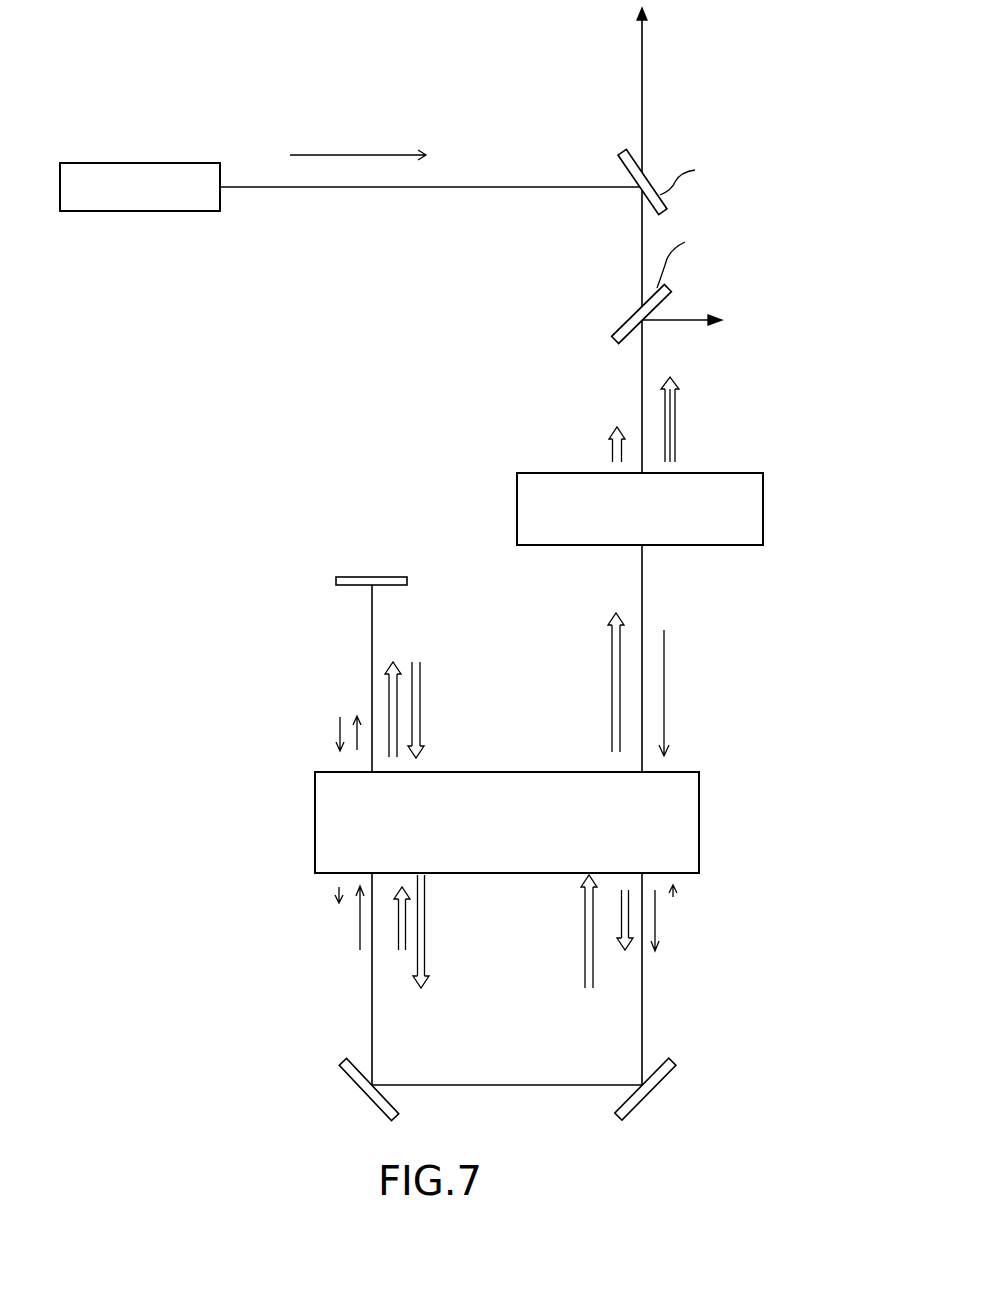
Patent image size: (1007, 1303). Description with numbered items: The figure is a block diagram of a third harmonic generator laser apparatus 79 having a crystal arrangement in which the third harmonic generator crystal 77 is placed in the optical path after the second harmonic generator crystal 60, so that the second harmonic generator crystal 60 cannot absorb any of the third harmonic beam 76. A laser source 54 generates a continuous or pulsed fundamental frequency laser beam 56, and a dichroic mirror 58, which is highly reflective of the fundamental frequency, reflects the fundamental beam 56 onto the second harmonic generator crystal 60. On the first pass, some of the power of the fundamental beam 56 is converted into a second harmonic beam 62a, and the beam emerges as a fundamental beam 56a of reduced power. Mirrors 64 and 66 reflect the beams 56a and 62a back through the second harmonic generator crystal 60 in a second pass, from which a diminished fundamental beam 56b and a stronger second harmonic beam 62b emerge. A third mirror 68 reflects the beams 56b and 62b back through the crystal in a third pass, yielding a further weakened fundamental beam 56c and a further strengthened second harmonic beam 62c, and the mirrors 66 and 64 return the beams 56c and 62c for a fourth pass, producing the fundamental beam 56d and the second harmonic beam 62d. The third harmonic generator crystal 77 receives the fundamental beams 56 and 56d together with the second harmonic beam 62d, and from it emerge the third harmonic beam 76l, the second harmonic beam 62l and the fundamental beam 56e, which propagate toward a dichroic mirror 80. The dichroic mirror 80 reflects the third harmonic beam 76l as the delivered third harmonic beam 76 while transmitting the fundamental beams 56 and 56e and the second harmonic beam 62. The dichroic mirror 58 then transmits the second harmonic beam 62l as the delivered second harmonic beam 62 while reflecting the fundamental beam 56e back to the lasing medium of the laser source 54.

The laser source 54 is at (153, 163).
The fundamental frequency laser beam 56 is at (342, 150).
The fundamental beam 56e is at (475, 190).
The dichroic mirror 58 is at (622, 152).
The second harmonic beam 62 is at (642, 50).
The dichroic mirror 80 is at (618, 330).
The third harmonic beam 76 is at (678, 320).
The second harmonic beam 62l is at (610, 447).
The third harmonic beam 76l is at (677, 425).
The third harmonic generator crystal 77 is at (763, 510).
The third mirror 68 is at (360, 577).
The second harmonic beam 62b is at (400, 680).
The fundamental beam 56b is at (342, 733).
The second harmonic beam 62d is at (611, 672).
The fundamental beam 56d is at (688, 709).
The second harmonic generator crystal 60 is at (699, 830).
The fundamental beam 56c is at (335, 890).
The fundamental beam 56a is at (358, 922).
The second harmonic beam 62c is at (427, 922).
The second harmonic beam 62a is at (397, 945).
The third harmonic generator laser apparatus 79 is at (237, 1007).
The mirror 66 is at (370, 1098).
The mirror 64 is at (660, 1080).